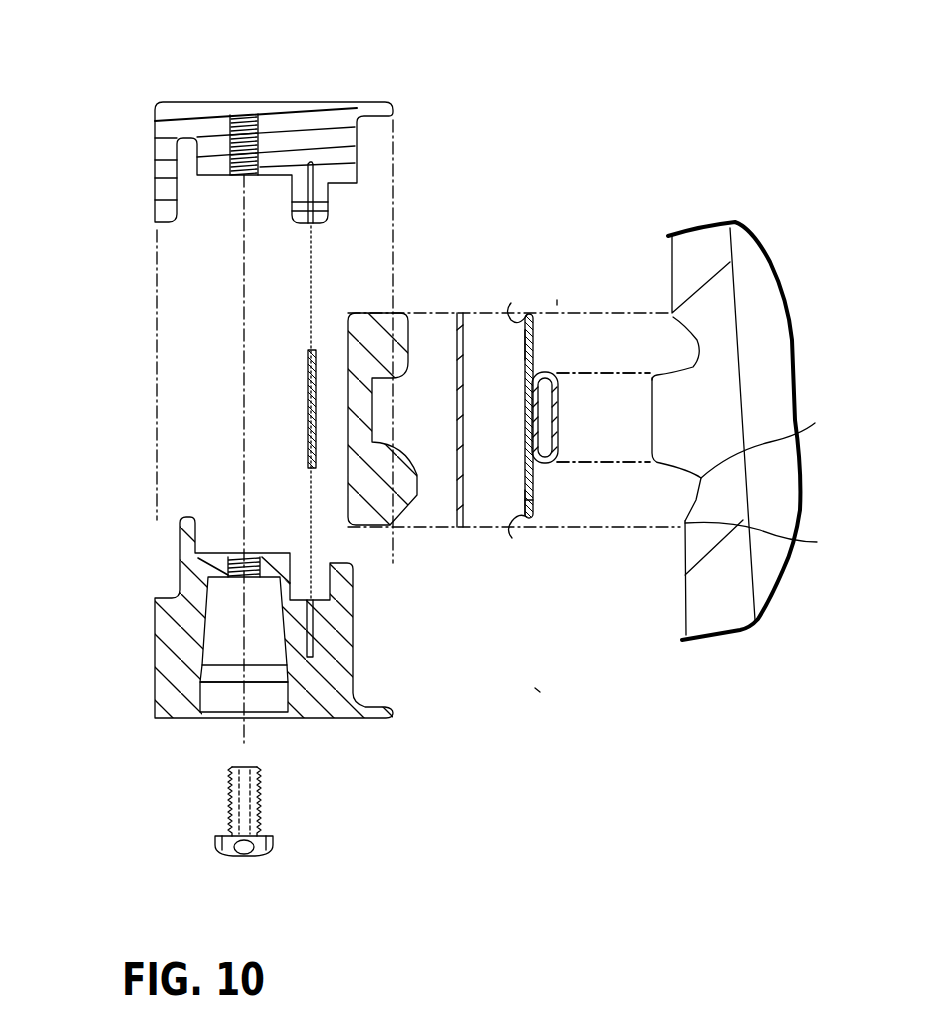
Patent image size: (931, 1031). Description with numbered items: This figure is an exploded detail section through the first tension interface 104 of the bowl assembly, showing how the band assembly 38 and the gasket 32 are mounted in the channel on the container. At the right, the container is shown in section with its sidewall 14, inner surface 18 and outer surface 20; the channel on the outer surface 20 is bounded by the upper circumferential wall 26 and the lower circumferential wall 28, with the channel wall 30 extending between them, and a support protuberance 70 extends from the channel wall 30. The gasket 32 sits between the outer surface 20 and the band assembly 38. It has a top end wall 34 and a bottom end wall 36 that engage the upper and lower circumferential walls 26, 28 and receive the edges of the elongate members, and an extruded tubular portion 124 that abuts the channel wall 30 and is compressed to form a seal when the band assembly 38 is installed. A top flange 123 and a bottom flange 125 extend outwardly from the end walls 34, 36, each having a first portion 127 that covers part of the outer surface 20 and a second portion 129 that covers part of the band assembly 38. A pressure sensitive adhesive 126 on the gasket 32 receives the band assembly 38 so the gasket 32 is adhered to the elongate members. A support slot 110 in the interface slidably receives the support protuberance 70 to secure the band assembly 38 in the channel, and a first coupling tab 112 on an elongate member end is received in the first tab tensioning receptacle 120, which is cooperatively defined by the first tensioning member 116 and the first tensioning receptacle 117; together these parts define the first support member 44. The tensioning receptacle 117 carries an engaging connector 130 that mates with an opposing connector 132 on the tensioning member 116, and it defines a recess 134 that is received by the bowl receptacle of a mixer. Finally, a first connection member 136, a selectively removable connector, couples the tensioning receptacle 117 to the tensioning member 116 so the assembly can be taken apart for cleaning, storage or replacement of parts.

The sidewall 14 is at (773, 310).
The inner surface 18 is at (761, 575).
The outer surface 20 is at (670, 277).
The upper circumferential wall 26 is at (673, 317).
The lower circumferential wall 28 is at (766, 538).
The channel wall 30 is at (769, 436).
The gasket 32 is at (557, 300).
The top end wall 34 is at (518, 322).
The bottom end wall 36 is at (527, 530).
The band assembly 38 is at (535, 688).
The first support member 44 is at (520, 148).
The support protuberance 70 is at (675, 432).
The first tension interface 104 is at (167, 385).
The support slot 110 is at (372, 408).
The first coupling tab 112 is at (308, 350).
The first tensioning member 116 is at (176, 113).
The first tensioning receptacle 117 is at (168, 695).
The first tab tensioning receptacle 120 is at (311, 170).
The top flange 123 is at (524, 316).
The extruded tubular portion 124 is at (547, 470).
The bottom flange 125 is at (503, 520).
The pressure sensitive adhesive 126 is at (463, 320).
The first portion 127 is at (515, 532).
The second portion 129 is at (512, 312).
The engaging connector 130 is at (222, 176).
The opposing connector 132 is at (220, 552).
The recess 134 is at (230, 700).
The first connection member 136 is at (228, 845).